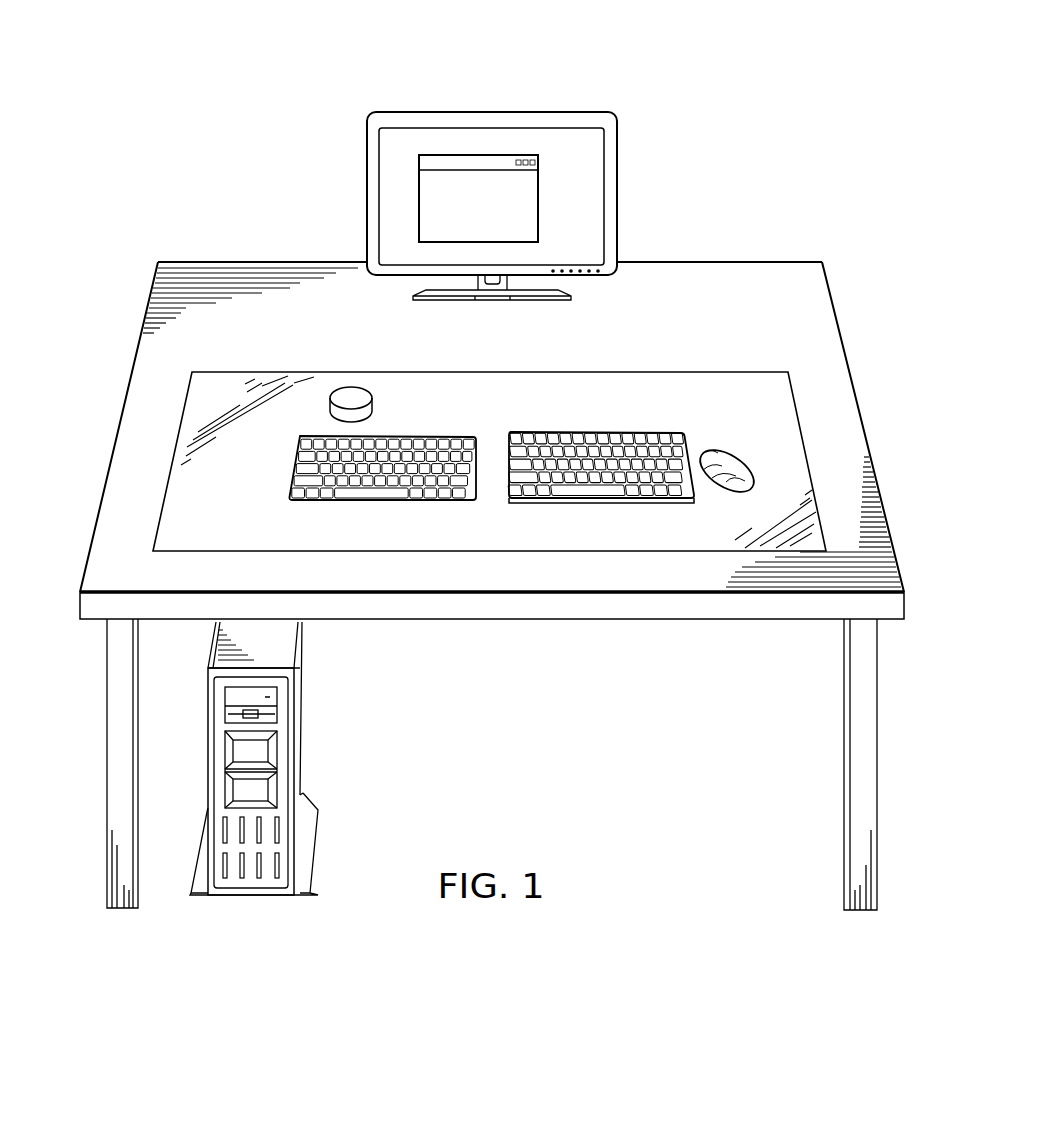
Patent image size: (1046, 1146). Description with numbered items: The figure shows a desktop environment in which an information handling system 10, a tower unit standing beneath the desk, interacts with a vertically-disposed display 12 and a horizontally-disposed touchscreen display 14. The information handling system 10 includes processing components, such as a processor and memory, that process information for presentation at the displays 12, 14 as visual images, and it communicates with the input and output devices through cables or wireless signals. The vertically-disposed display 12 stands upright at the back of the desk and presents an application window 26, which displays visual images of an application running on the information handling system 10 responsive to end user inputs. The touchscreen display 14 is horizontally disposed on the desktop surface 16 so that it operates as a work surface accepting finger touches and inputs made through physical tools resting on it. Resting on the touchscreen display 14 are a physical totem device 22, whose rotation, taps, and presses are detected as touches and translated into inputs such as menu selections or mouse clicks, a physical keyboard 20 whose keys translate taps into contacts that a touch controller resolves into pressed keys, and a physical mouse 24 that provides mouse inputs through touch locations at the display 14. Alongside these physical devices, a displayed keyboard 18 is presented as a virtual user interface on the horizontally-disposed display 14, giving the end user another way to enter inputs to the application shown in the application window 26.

The information handling system 10 is at (251, 896).
The vertically-disposed display 12 is at (490, 112).
The horizontally-disposed touchscreen display 14 is at (745, 388).
The desktop surface 16 is at (284, 274).
The displayed keyboard 18 is at (441, 503).
The physical keyboard 20 is at (650, 433).
The physical totem device 22 is at (352, 398).
The physical mouse 24 is at (731, 495).
The application window 26 is at (420, 192).